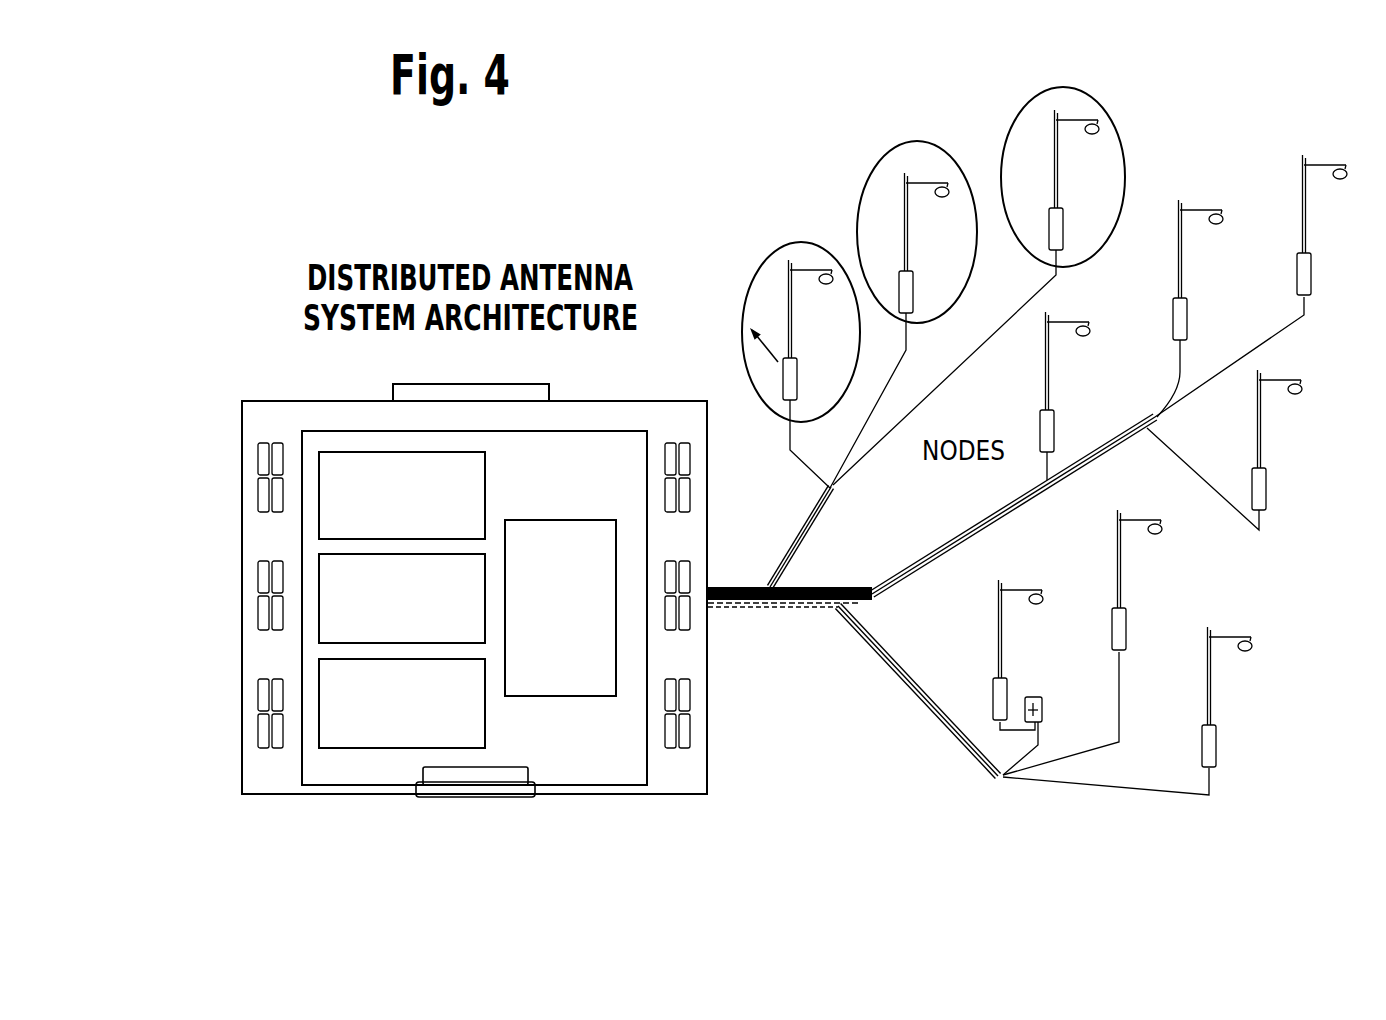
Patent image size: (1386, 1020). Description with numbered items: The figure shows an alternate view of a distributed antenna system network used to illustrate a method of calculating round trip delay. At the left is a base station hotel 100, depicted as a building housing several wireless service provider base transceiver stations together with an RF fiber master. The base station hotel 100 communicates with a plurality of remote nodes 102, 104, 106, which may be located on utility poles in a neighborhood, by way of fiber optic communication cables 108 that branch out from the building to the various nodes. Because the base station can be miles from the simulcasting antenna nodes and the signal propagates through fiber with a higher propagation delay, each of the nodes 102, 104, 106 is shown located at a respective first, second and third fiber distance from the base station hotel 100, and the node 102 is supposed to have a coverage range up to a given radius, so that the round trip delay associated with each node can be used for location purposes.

The base station hotel 100 is at (230, 530).
The remote node 102 is at (776, 370).
The remote node 104 is at (895, 265).
The remote node 106 is at (1045, 200).
The fiber optic communication cables 108 is at (836, 612).